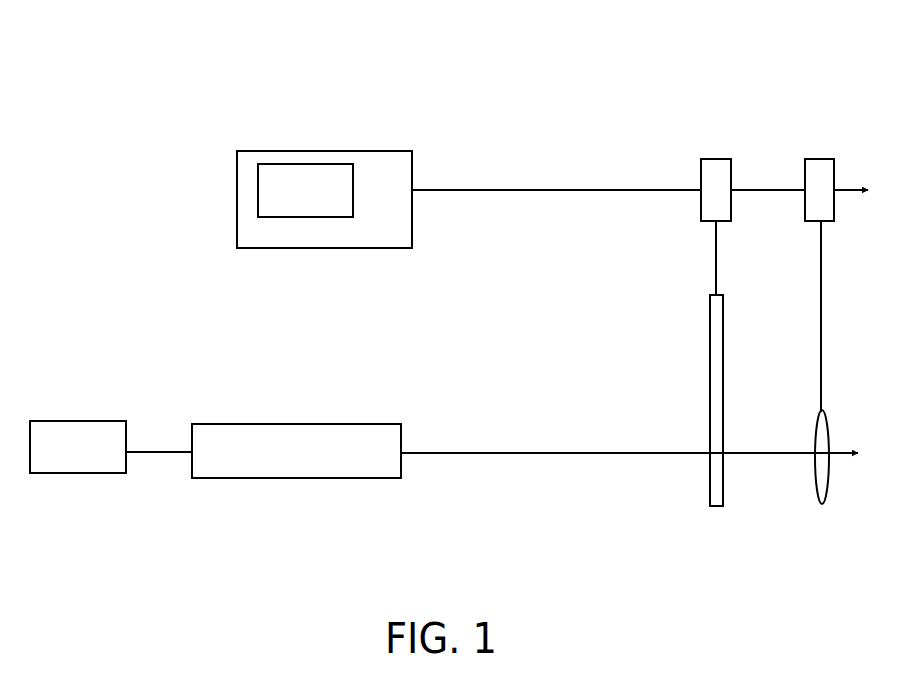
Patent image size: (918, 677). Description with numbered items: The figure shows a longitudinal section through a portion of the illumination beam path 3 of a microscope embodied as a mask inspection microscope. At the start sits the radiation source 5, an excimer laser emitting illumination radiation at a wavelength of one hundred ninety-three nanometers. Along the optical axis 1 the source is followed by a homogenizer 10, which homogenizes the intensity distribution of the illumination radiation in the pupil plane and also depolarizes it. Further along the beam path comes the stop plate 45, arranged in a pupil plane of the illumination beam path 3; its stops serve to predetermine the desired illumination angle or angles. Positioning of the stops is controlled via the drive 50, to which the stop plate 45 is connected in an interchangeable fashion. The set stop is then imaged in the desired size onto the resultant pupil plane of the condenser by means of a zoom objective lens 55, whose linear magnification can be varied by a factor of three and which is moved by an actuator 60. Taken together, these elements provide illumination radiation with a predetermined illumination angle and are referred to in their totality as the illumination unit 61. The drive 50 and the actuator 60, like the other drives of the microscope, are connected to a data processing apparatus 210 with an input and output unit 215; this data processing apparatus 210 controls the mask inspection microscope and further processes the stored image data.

The illumination unit 61 is at (494, 95).
The data processing apparatus 210 is at (241, 173).
The input and output unit 215 is at (265, 205).
The drive 50 is at (716, 160).
The actuator 60 is at (820, 160).
The radiation source 5 is at (75, 428).
The homogenizer 10 is at (270, 432).
The optical axis 1 is at (477, 456).
The stop plate 45 is at (713, 508).
The zoom objective lens 55 is at (821, 508).
The illumination beam path 3 is at (730, 584).